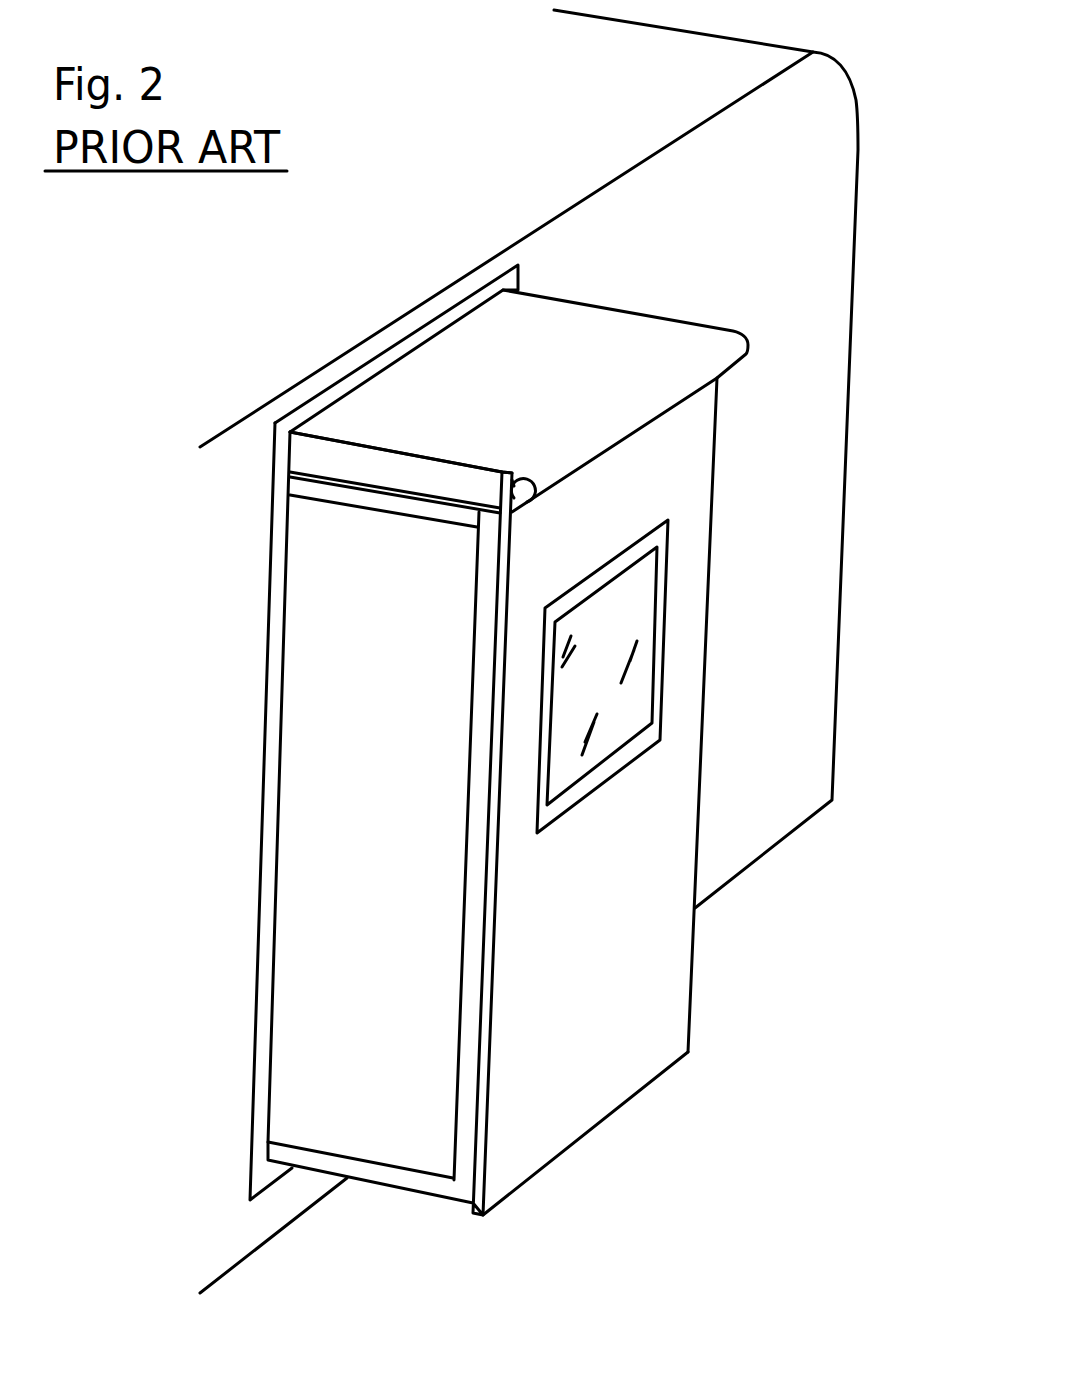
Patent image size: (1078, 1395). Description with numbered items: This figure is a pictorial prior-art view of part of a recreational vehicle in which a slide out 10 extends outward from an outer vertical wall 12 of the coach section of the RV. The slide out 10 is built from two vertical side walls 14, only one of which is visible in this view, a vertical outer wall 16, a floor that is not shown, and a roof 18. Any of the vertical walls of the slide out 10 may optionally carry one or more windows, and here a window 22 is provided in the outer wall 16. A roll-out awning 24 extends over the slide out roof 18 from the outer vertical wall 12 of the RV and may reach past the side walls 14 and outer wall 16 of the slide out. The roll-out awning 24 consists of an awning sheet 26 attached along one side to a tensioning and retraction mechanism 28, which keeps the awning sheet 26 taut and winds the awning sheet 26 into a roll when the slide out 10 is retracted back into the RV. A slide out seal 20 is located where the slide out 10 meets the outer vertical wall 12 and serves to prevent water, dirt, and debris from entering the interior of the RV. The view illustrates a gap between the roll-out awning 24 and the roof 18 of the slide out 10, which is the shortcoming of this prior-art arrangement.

The slide out 10 is at (607, 1115).
The outer vertical wall 12 is at (818, 213).
The vertical side wall 14 is at (297, 990).
The vertical outer wall 16 is at (656, 1024).
The roof 18 is at (440, 476).
The slide out seal 20 is at (318, 452).
The window 22 is at (575, 802).
The roll-out awning 24 is at (456, 426).
The awning sheet 26 is at (432, 453).
The tensioning and retraction mechanism 28 is at (561, 458).